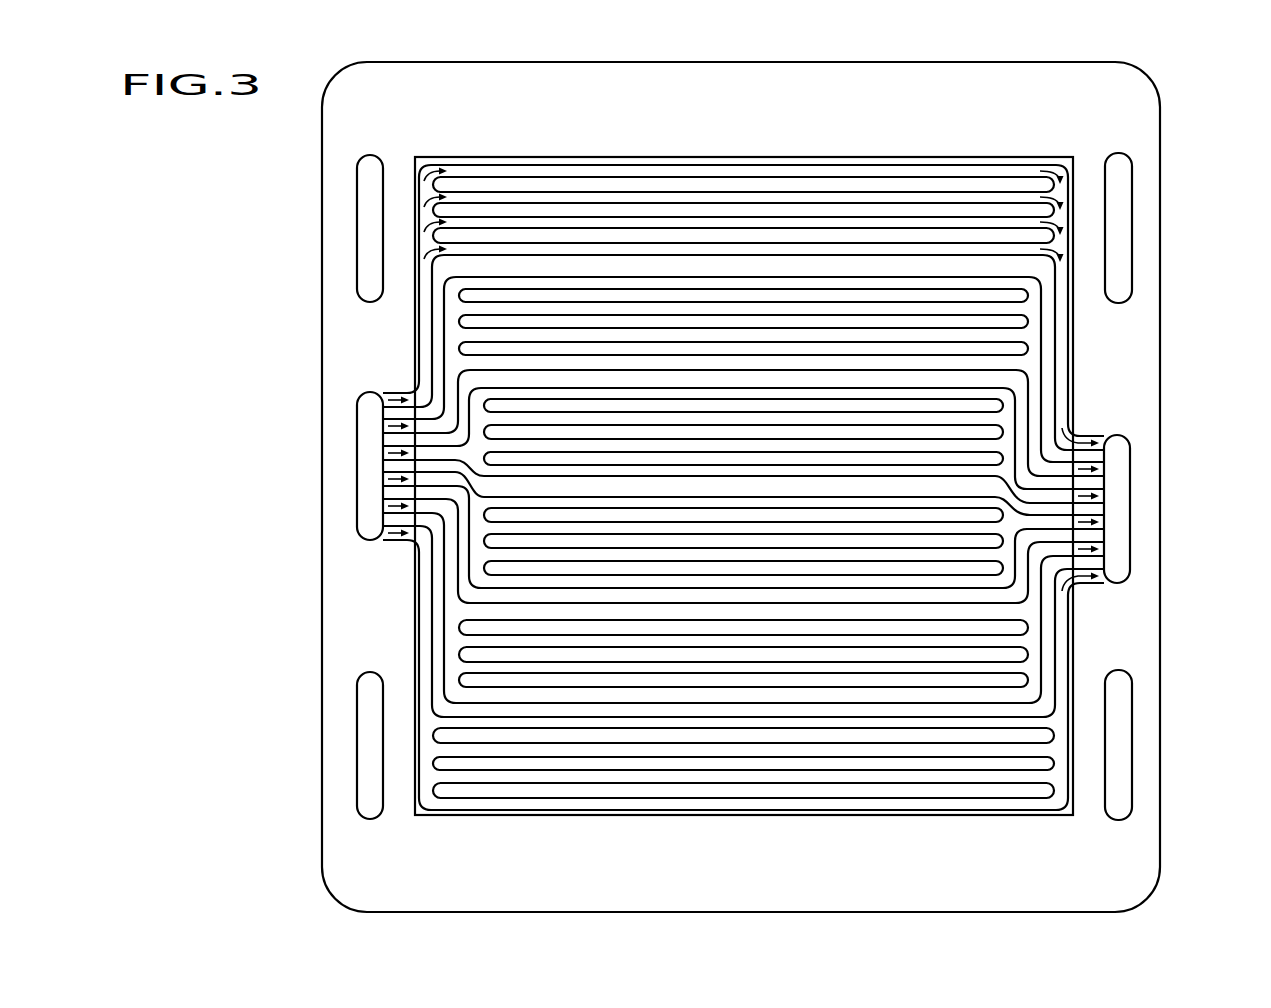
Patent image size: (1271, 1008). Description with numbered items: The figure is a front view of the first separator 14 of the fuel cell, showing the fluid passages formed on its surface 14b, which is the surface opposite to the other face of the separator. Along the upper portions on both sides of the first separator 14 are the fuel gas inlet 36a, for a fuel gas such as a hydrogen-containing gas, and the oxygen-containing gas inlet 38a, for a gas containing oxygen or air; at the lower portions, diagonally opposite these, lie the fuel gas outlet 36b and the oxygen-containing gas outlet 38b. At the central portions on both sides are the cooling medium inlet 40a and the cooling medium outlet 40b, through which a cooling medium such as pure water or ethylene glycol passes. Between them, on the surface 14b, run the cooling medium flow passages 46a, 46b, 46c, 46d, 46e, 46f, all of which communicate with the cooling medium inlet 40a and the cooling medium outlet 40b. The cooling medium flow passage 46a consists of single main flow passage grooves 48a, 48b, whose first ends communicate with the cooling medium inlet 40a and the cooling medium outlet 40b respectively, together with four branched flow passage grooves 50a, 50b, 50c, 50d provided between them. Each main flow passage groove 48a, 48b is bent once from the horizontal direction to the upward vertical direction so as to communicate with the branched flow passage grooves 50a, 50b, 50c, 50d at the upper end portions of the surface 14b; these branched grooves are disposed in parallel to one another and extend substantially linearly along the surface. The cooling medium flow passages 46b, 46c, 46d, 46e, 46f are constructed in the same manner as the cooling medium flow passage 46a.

The first separator 14 is at (1174, 116).
The surface 14b is at (1162, 144).
The fuel gas inlet 36a is at (1134, 228).
The fuel gas outlet 36b is at (364, 752).
The oxygen-containing gas inlet 38a is at (364, 228).
The oxygen-containing gas outlet 38b is at (1133, 745).
The cooling medium inlet 40a is at (358, 528).
The cooling medium outlet 40b is at (1120, 468).
The cooling medium flow passage 46a is at (623, 149).
The cooling medium flow passage 46b is at (736, 270).
The cooling medium flow passage 46c is at (849, 377).
The cooling medium flow passage 46d is at (617, 598).
The cooling medium flow passage 46e is at (724, 708).
The cooling medium flow passage 46f is at (810, 818).
The main flow passage groove 48a is at (383, 428).
The main flow passage groove 48b is at (1035, 418).
The branched flow passage groove 50a is at (483, 172).
The branched flow passage groove 50b is at (528, 198).
The branched flow passage groove 50c is at (572, 225).
The branched flow passage groove 50d is at (655, 250).